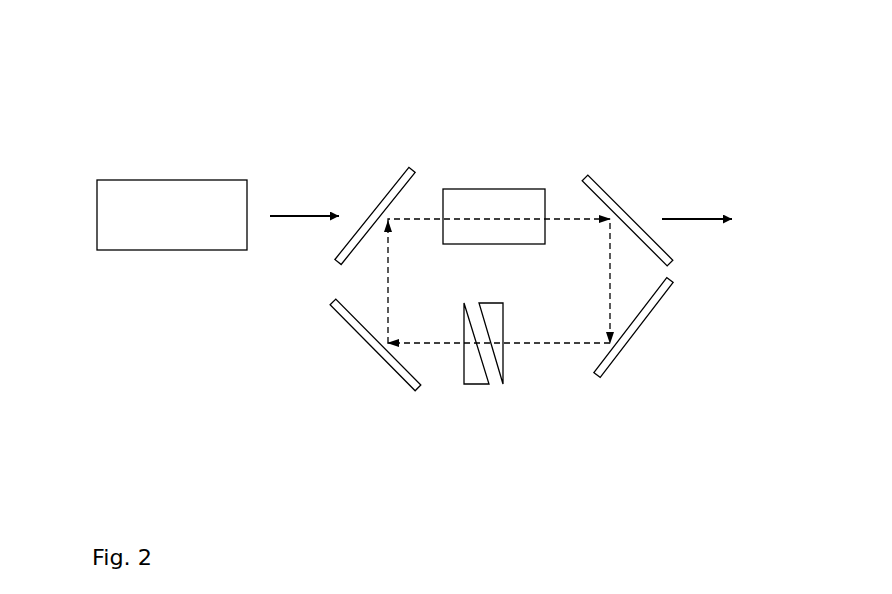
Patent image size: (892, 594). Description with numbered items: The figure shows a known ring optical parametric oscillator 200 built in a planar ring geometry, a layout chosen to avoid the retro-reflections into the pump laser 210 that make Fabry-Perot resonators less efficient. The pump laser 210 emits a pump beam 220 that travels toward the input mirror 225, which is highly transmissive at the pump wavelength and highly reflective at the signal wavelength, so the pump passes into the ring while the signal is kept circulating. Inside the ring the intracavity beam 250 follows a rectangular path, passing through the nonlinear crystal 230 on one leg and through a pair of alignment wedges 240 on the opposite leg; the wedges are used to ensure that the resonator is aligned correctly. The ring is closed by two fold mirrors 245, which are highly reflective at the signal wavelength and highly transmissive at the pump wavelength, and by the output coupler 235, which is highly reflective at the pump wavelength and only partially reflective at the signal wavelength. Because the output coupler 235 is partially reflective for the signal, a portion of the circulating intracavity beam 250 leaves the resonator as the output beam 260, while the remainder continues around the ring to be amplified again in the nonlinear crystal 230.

The ring optical parametric oscillator 200 is at (90, 100).
The pump laser 210 is at (172, 252).
The pump beam 220 is at (291, 198).
The input mirror 225 is at (408, 165).
The nonlinear crystal 230 is at (495, 186).
The output coupler 235 is at (717, 150).
The alignment wedges 240 is at (491, 389).
The fold mirrors 245 is at (597, 383).
The intracavity beam 250 is at (383, 300).
The output beam 260 is at (710, 245).